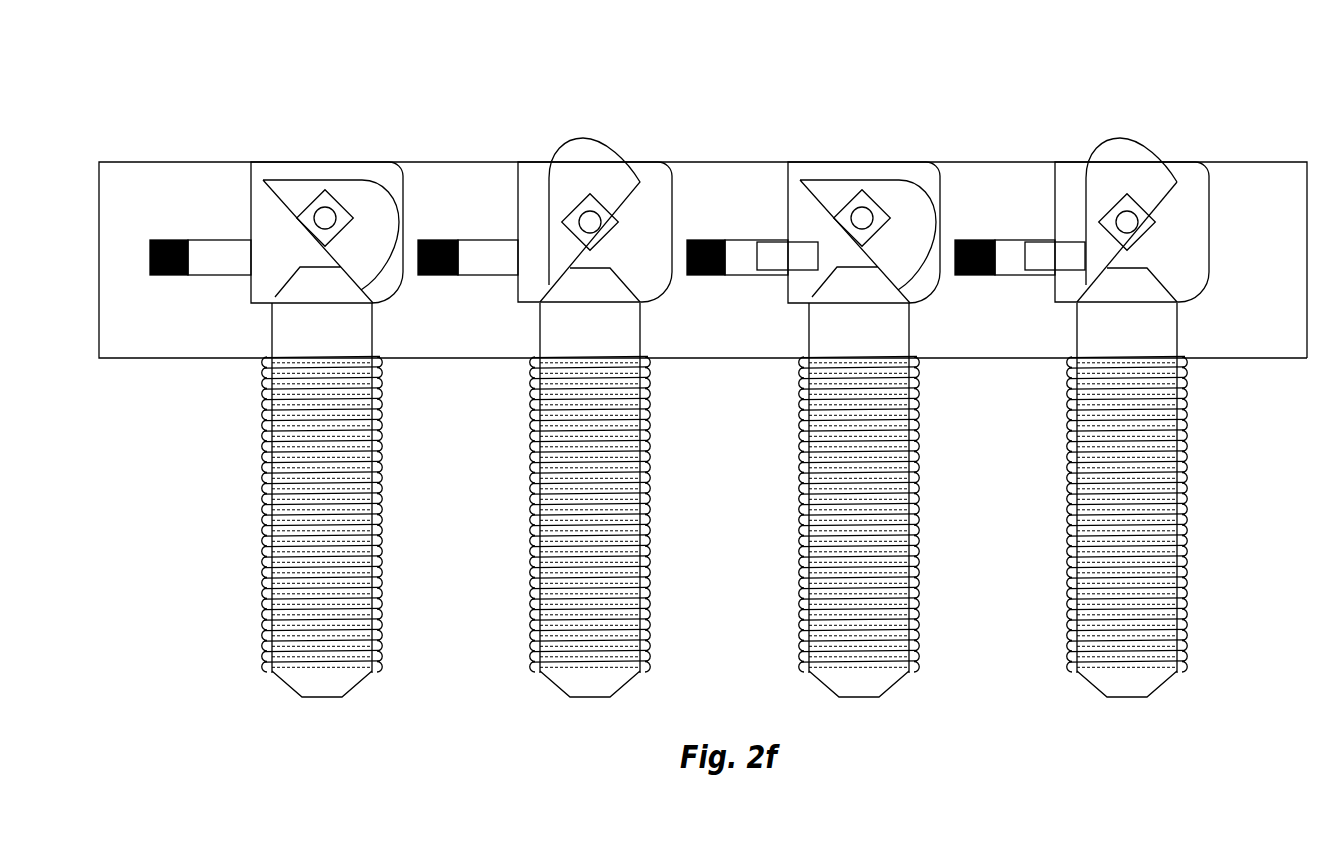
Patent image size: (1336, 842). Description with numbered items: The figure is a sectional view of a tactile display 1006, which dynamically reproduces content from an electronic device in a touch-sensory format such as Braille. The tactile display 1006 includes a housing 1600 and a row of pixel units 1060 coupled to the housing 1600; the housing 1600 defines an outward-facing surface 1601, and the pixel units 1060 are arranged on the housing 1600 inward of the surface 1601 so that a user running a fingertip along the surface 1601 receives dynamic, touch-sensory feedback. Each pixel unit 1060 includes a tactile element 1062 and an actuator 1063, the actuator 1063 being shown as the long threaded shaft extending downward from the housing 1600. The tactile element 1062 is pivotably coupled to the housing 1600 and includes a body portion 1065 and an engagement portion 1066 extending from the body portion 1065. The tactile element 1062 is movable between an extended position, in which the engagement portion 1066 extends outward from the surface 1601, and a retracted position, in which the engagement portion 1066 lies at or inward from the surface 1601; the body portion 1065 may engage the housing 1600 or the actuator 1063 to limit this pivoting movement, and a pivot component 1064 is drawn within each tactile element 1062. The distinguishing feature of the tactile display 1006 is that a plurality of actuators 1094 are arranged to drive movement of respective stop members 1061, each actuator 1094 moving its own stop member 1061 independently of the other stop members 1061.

The tactile display 1006 is at (200, 112).
The actuator 1094 is at (165, 238).
The stop member 1061 is at (220, 238).
The housing 1600 is at (492, 193).
The outward-facing surface 1601 is at (725, 160).
The pivot bolt 1064 is at (895, 141).
The pixel unit 1060 is at (1097, 160).
The tactile element 1062 is at (1105, 115).
The engagement portion 1066 is at (1209, 125).
The body portion 1065 is at (1196, 302).
The actuator 1063 is at (1195, 500).